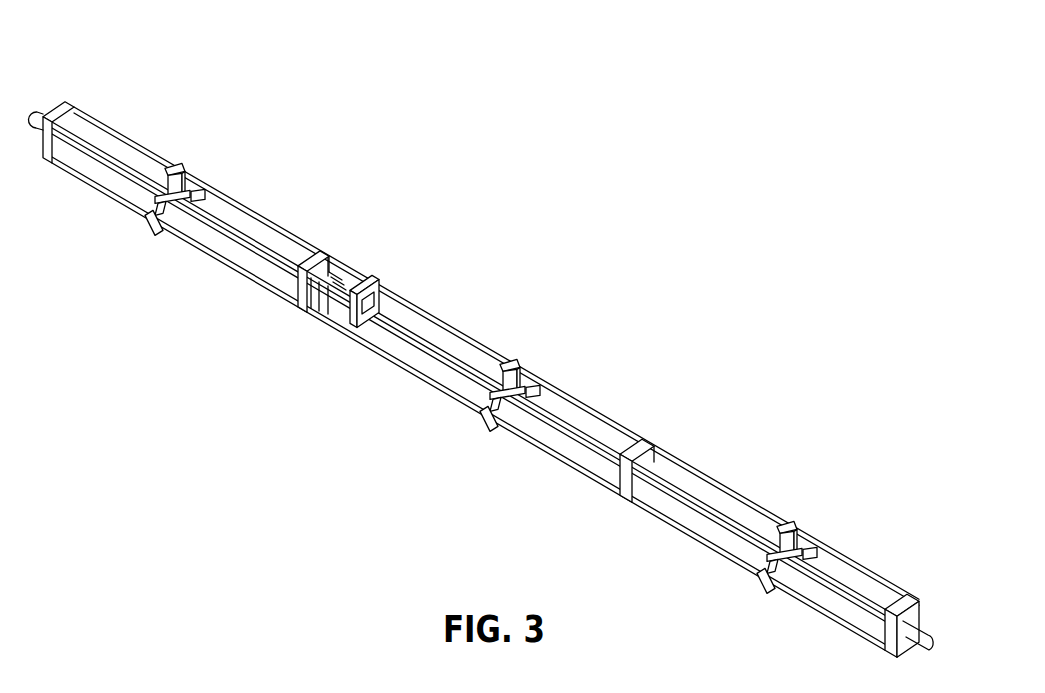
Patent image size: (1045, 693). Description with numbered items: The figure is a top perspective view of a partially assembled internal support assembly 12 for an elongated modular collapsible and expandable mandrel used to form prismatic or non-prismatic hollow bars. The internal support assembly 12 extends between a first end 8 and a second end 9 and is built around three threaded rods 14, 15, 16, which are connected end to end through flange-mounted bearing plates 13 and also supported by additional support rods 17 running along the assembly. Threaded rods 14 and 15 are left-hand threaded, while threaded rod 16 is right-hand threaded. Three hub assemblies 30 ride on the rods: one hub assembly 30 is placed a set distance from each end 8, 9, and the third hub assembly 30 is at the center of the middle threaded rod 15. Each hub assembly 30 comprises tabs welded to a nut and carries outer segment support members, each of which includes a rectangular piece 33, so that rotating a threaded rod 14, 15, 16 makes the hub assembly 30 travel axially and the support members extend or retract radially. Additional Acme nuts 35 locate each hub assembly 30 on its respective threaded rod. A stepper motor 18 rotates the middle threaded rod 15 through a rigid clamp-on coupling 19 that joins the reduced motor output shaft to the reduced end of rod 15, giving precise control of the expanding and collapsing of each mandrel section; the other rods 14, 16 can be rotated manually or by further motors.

The end 8 is at (37, 104).
The end 9 is at (937, 615).
The internal support assembly 12 is at (483, 343).
The bearing plates 13 is at (72, 105).
The threaded rod 14 is at (103, 152).
The middle threaded rod 15 is at (425, 332).
The threaded rod 16 is at (690, 490).
The support rods 17 is at (85, 185).
The stepper motor 18 is at (328, 306).
The rigid clamp-on coupling 19 is at (368, 290).
The hub assembly 30 is at (158, 237).
The rectangular piece 33 is at (513, 357).
The Acme nuts 35 is at (170, 165).